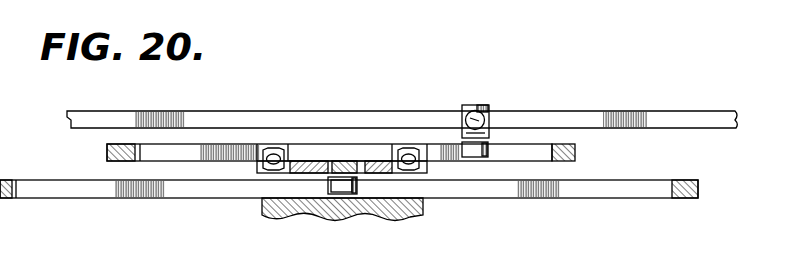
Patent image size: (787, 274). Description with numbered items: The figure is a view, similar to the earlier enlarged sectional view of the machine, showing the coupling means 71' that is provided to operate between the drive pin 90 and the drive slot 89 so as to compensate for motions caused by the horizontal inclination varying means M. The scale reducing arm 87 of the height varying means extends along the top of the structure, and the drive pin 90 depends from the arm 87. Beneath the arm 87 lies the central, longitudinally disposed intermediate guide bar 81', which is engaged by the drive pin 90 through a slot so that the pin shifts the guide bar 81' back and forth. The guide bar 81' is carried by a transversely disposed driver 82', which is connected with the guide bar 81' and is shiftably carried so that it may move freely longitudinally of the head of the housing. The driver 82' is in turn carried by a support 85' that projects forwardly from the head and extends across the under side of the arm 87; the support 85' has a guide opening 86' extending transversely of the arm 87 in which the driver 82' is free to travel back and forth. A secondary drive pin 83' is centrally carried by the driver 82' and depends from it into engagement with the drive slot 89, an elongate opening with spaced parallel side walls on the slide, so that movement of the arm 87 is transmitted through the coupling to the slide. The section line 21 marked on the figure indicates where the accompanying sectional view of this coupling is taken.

The scale reducing arm 87 is at (592, 118).
The intermediate guide bar 81' is at (307, 159).
The coupling means 71' is at (604, 162).
The section line 21— 21 is at (127, 140).
The support 85' is at (309, 133).
The driver 82' is at (361, 207).
The guide opening 86' is at (366, 133).
The secondary drive pin 83' is at (338, 215).
The drive pin 90 is at (489, 151).
The drive slot 89 is at (82, 190).
The horizontal inclination varying means M is at (252, 204).